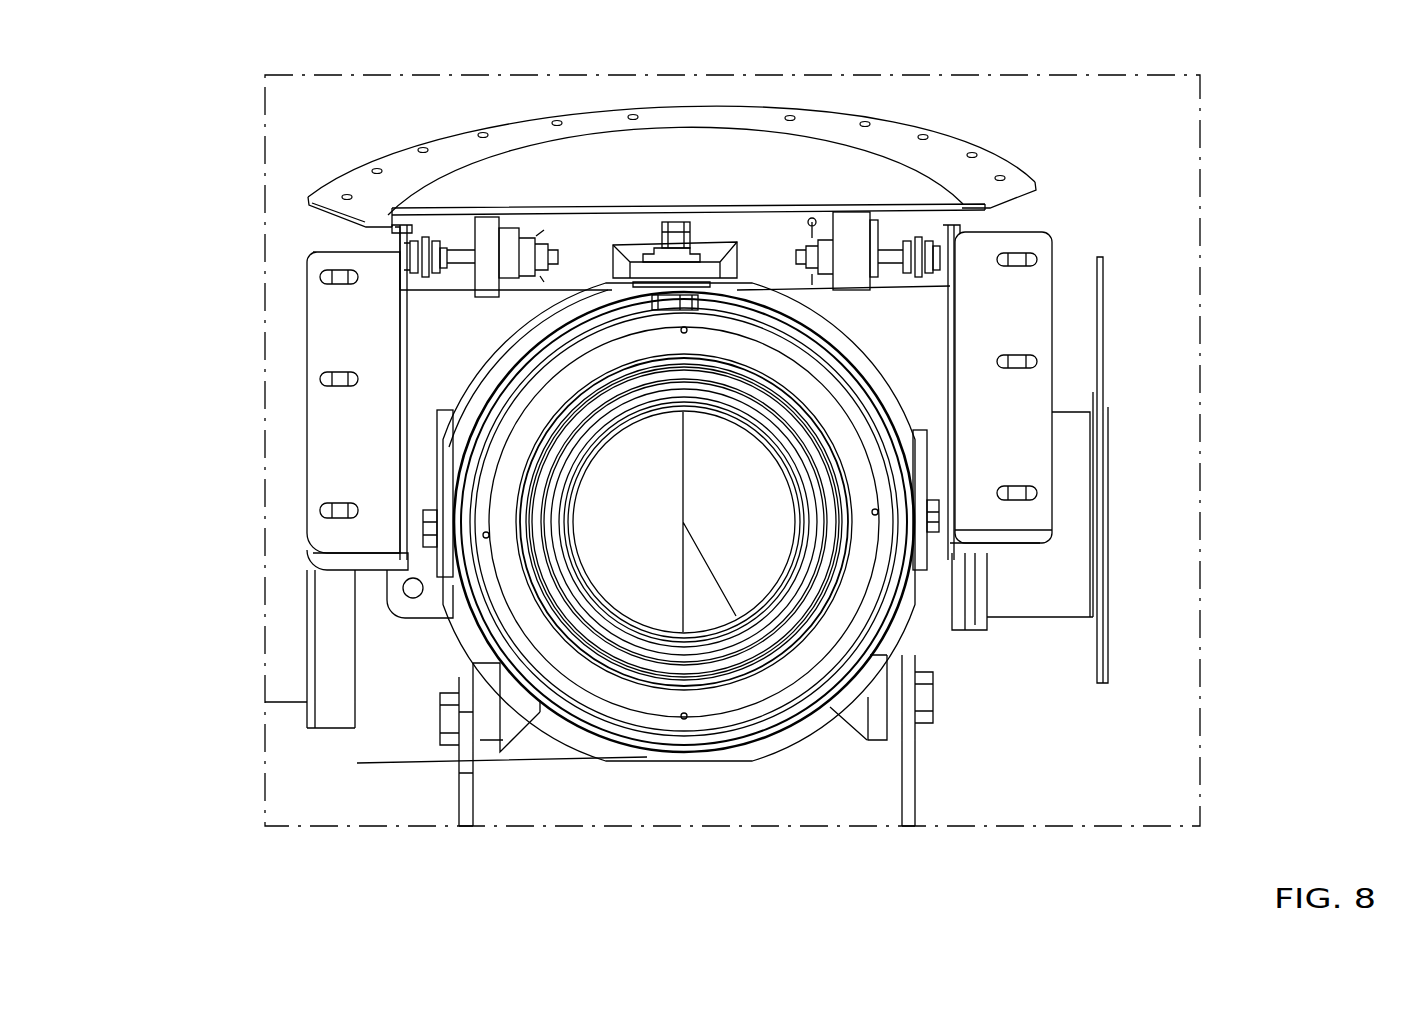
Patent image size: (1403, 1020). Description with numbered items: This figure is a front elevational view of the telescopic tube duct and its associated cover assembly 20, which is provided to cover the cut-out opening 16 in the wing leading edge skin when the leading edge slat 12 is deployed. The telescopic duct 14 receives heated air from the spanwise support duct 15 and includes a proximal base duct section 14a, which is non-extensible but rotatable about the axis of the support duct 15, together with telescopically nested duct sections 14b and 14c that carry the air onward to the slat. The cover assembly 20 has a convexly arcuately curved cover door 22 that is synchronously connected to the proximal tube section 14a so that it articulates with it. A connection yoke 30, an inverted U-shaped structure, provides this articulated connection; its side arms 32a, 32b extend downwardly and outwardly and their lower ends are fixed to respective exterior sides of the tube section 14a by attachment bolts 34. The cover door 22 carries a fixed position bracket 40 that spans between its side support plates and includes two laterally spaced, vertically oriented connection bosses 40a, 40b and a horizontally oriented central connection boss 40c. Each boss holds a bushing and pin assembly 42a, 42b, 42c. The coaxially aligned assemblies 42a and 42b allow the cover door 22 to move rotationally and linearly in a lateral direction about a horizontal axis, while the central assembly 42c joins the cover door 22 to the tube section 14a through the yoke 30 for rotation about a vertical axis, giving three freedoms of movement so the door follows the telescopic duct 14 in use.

The leading edge slat 12 is at (1131, 205).
The telescopic duct 14 is at (557, 723).
The proximal base duct section 14a is at (788, 697).
The telescopically nested duct section 14b is at (633, 697).
The telescopically nested duct section 14c is at (713, 660).
The spanwise support duct 15 is at (1080, 483).
The cut-out opening 16 is at (400, 296).
The cover assembly 20 is at (672, 157).
The cover door 22 is at (700, 148).
The connection yoke 30 is at (498, 364).
The side arm 32a is at (443, 430).
The side arm 32b is at (915, 410).
The attachment bolts 34 is at (400, 537).
The bracket 40 is at (573, 228).
The connection boss 40a is at (488, 247).
The connection boss 40b is at (862, 240).
The central connection boss 40c is at (627, 247).
The bushing and pin assembly 42a is at (437, 253).
The bushing and pin assembly 42b is at (913, 240).
The bushing and pin assembly 42c is at (686, 228).